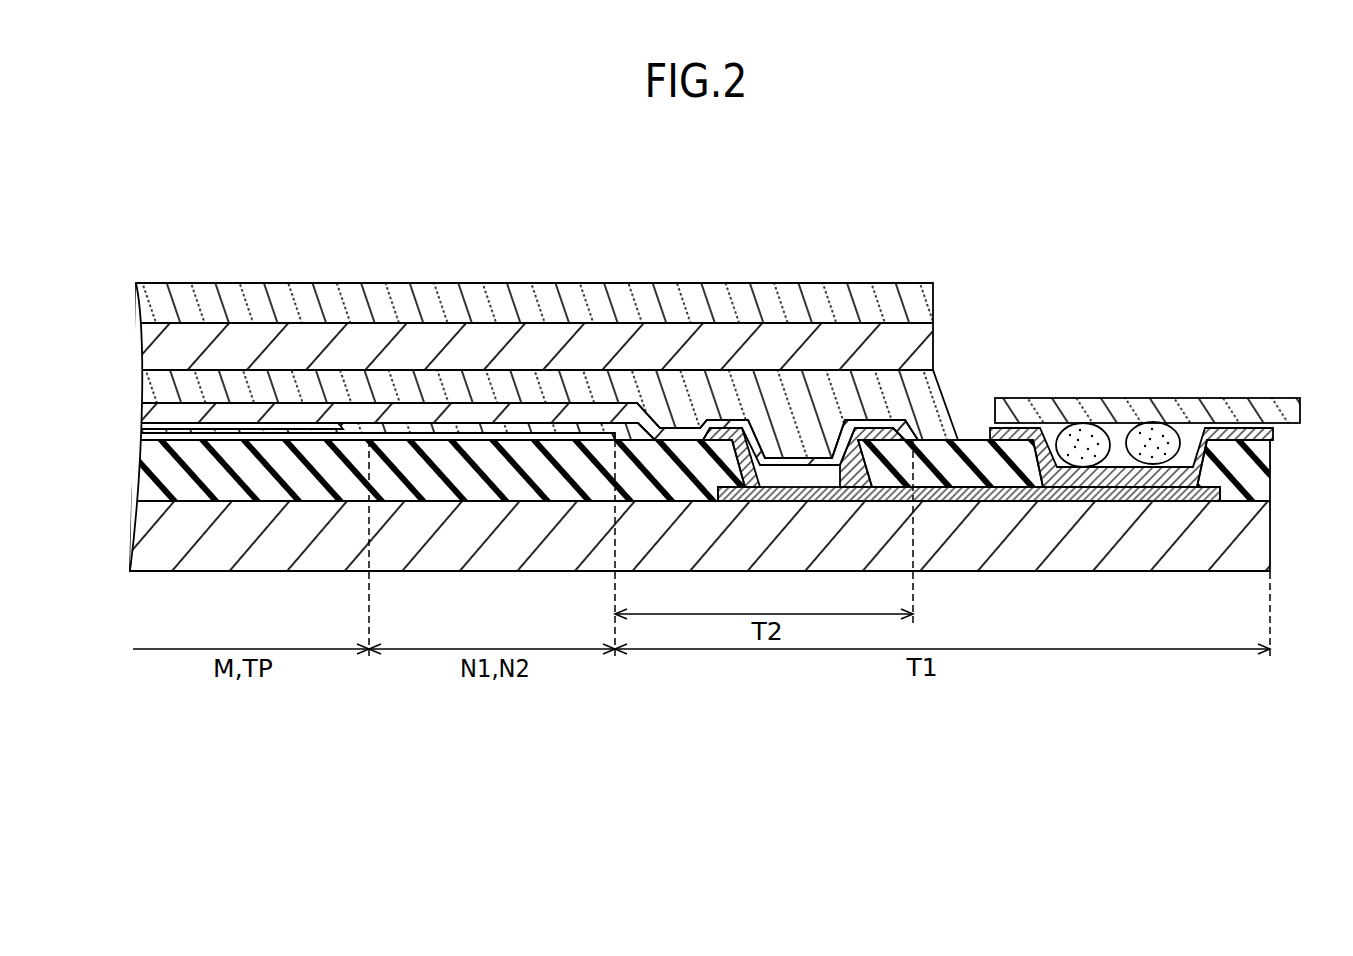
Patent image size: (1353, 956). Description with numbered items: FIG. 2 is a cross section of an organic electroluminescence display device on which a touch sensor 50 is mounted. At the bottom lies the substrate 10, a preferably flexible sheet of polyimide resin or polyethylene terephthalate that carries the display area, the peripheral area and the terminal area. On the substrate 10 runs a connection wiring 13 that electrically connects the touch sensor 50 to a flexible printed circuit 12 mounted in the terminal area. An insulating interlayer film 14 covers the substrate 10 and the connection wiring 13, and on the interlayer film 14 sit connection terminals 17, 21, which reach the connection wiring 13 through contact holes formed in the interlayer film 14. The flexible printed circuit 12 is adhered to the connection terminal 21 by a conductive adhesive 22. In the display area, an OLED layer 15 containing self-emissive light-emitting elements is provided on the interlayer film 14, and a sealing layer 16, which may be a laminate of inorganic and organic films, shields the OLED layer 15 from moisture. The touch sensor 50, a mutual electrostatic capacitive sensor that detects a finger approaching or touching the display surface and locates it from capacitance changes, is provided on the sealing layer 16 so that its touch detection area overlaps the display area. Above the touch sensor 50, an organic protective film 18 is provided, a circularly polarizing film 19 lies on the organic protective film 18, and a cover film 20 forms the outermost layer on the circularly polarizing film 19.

The substrate 10 is at (1272, 550).
The flexible printed circuit 12 is at (1300, 398).
The connection wiring 13 is at (1210, 495).
The interlayer film 14 is at (143, 477).
The OLED layer 15 is at (137, 437).
The sealing layer 16 is at (137, 428).
The connection terminal 17 is at (807, 475).
The organic protective film 18 is at (928, 402).
The circularly polarizing film 19 is at (920, 337).
The cover film 20 is at (933, 307).
The connection terminal 21 is at (1272, 432).
The conductive adhesive 22 is at (1087, 437).
The touch sensor 50 is at (140, 413).